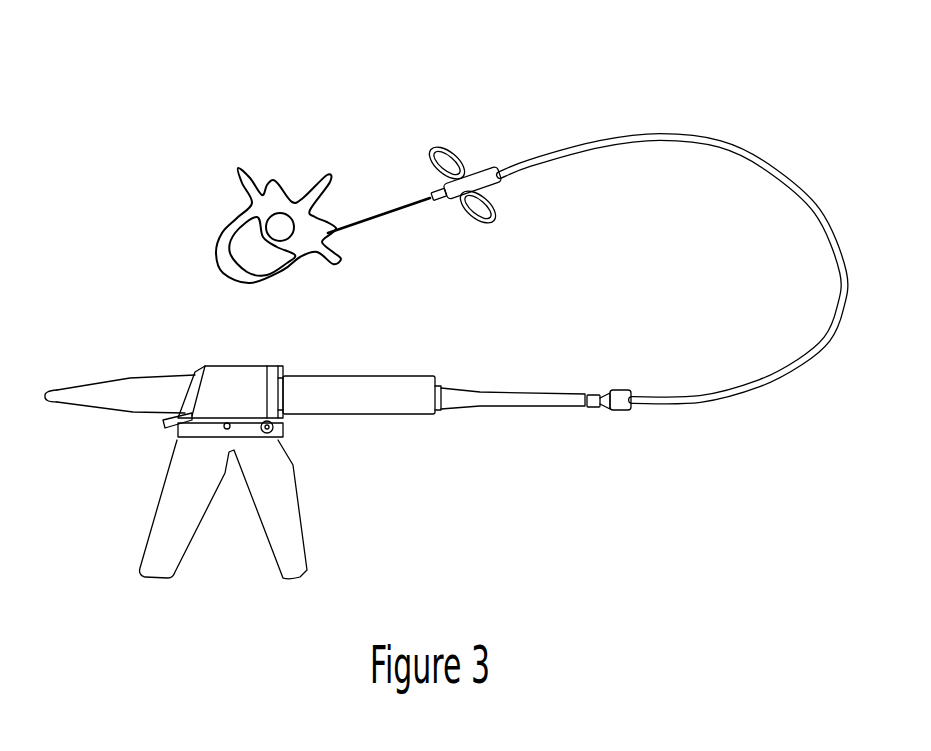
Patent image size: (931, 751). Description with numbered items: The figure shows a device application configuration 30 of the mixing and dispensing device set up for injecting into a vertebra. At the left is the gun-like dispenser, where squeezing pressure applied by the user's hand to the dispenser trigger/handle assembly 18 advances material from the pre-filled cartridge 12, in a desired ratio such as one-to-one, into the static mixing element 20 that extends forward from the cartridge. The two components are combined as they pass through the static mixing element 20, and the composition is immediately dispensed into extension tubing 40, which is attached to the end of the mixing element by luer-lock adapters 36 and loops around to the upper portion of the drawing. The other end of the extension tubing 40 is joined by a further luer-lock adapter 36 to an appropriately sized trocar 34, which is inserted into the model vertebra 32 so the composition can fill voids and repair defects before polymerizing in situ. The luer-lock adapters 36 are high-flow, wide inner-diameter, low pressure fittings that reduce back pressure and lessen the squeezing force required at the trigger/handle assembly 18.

The pre-filled cartridge 12 is at (367, 377).
The dispenser trigger/handle assembly 18 is at (316, 533).
The static mixing element 20 is at (515, 390).
The device application configuration 30 is at (686, 89).
The model vertebra 32 is at (223, 223).
The trocar 34 is at (380, 213).
The luer-lock adapter 36 is at (620, 390).
The extension tubing 40 is at (800, 353).